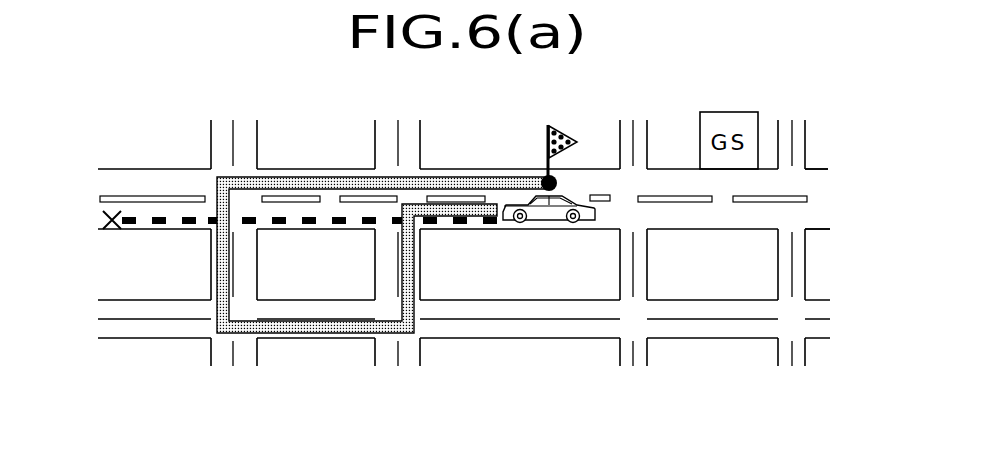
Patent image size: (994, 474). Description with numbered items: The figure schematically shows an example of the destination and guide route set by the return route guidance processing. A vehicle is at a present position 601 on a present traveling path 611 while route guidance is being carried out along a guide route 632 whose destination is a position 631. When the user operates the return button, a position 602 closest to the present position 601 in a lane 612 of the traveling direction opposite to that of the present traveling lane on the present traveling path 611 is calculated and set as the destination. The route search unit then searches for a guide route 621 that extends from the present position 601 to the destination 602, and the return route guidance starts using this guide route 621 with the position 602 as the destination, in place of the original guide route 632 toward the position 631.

The present position 601 is at (552, 222).
The destination 602 is at (546, 176).
The present traveling path 611 is at (817, 200).
The lane 612 is at (665, 182).
The guide route 621 is at (304, 176).
The position 631 is at (117, 223).
The guide route 632 is at (313, 225).